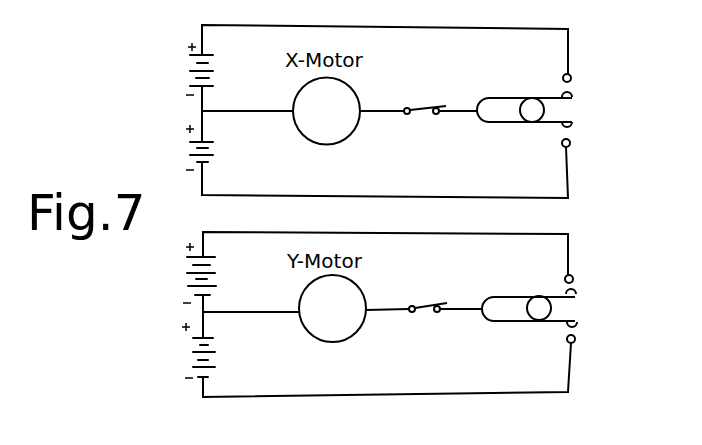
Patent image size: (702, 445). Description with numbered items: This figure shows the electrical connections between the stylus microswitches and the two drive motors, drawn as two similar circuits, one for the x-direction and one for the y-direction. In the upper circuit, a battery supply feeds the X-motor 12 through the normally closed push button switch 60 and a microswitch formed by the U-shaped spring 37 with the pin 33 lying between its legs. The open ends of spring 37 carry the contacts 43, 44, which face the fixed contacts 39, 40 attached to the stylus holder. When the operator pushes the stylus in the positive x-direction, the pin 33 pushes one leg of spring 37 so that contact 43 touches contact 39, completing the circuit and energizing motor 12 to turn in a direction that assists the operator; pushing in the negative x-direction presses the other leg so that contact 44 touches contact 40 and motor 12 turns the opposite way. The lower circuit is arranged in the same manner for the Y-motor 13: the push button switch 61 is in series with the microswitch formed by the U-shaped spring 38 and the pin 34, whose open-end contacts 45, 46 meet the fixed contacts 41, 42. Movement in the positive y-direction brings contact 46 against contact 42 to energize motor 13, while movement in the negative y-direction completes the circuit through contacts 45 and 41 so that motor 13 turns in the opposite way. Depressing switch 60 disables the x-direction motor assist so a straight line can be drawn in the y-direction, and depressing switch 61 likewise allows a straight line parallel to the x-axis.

The motor 12 is at (305, 141).
The motor 13 is at (311, 338).
The push button switch 60 is at (420, 113).
The push button switch 61 is at (425, 311).
The U-shaped spring 37 is at (503, 123).
The U-shaped spring 38 is at (498, 322).
The pin 33 is at (532, 114).
The pin 34 is at (539, 312).
The contact 39 is at (571, 74).
The contact 40 is at (570, 146).
The contact 41 is at (572, 275).
The contact 42 is at (574, 343).
The contact 43 is at (579, 95).
The contact 44 is at (579, 127).
The contact 45 is at (578, 293).
The contact 46 is at (580, 322).